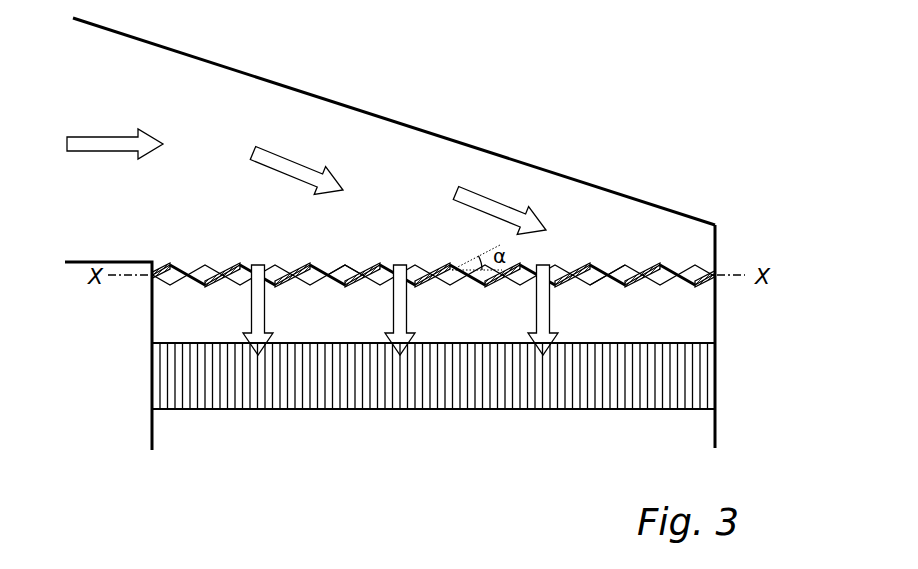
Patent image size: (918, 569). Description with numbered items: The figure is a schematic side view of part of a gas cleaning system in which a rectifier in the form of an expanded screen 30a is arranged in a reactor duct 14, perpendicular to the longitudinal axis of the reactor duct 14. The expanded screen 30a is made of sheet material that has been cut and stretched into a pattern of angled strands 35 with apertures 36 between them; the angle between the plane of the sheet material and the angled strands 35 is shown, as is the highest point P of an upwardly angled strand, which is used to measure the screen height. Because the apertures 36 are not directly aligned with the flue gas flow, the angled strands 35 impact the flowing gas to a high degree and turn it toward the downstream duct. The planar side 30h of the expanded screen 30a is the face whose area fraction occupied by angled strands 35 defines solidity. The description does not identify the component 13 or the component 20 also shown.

The inclined guide wall 13 is at (352, 113).
The reactor duct 14 is at (710, 436).
The filter element 20 is at (718, 375).
The expanded screen 30a is at (643, 262).
The planar side 30h is at (605, 290).
The angled strands 35 is at (450, 251).
The apertures 36 is at (320, 268).
The highest point of angled strand P is at (346, 266).